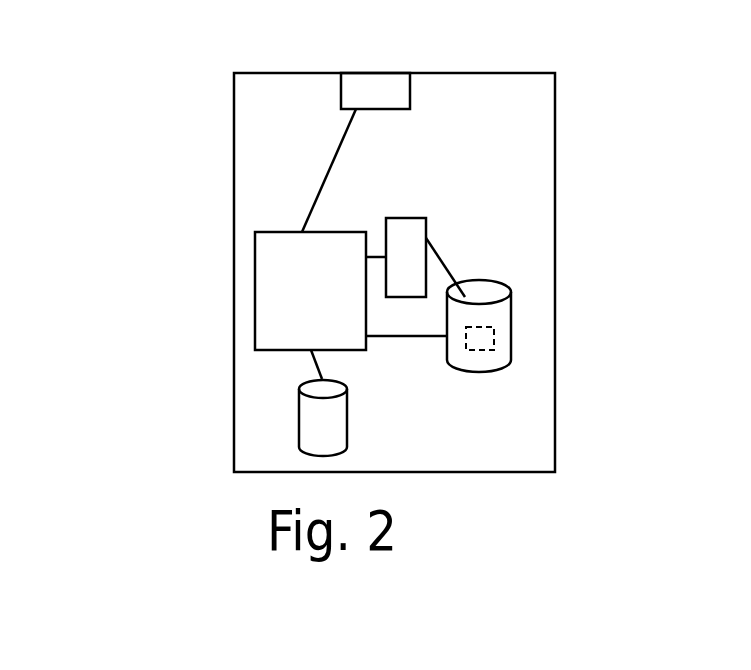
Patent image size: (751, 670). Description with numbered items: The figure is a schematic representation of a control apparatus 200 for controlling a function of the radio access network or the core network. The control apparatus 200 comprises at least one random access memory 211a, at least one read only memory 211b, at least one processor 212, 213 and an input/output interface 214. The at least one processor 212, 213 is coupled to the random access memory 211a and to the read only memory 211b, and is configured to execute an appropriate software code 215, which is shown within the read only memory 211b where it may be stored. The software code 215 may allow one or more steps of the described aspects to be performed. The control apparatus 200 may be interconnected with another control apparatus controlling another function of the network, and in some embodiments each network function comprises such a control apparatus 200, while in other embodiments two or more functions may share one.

The control apparatus 200 is at (218, 69).
The input/output interface 214 is at (382, 92).
The processor 213 is at (397, 237).
The processor 212 is at (256, 316).
The random access memory (RAM) 211a is at (299, 414).
The read only memory (ROM) 211b is at (508, 355).
The software code 215 is at (491, 328).